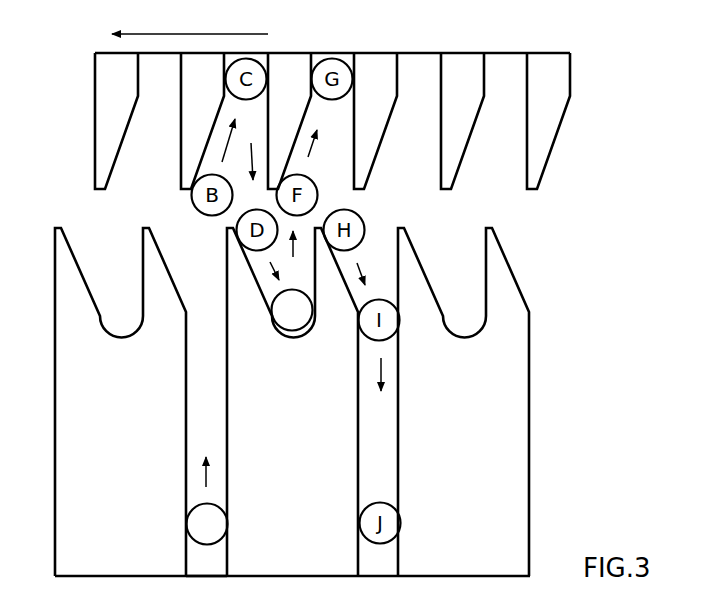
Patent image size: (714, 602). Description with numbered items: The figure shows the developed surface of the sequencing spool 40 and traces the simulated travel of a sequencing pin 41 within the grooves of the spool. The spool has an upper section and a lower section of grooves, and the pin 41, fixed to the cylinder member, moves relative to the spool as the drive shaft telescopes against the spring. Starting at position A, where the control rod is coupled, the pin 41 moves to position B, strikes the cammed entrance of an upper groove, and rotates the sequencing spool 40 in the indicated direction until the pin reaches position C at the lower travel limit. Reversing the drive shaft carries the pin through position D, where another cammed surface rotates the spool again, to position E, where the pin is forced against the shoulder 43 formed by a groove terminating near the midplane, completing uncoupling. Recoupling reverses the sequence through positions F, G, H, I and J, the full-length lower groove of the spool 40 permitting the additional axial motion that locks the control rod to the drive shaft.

The sequencing spool 40 is at (68, 527).
The sequencing pin 41 is at (222, 524).
The shoulder 43 is at (306, 325).